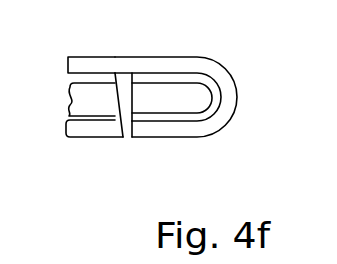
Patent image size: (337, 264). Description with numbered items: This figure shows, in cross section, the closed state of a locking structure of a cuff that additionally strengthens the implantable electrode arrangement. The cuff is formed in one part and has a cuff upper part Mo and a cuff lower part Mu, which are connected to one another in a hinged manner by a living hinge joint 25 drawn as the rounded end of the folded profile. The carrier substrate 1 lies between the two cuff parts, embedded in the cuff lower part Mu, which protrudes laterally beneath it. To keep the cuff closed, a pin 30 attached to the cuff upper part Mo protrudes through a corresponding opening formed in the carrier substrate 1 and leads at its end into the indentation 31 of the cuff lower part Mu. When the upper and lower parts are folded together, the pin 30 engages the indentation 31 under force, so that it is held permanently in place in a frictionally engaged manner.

The carrier substrate 1 is at (88, 100).
The living hinge joint 25 is at (223, 97).
The pin 30 is at (123, 98).
The indentation 31 is at (135, 125).
The cuff upper part Mo is at (95, 64).
The cuff lower part Mu is at (92, 132).